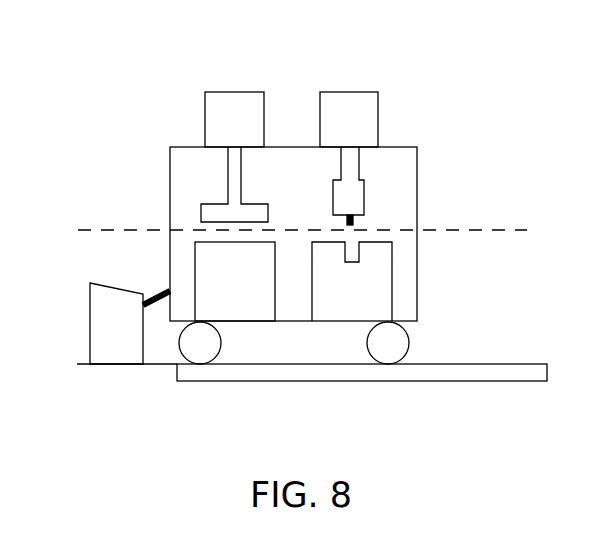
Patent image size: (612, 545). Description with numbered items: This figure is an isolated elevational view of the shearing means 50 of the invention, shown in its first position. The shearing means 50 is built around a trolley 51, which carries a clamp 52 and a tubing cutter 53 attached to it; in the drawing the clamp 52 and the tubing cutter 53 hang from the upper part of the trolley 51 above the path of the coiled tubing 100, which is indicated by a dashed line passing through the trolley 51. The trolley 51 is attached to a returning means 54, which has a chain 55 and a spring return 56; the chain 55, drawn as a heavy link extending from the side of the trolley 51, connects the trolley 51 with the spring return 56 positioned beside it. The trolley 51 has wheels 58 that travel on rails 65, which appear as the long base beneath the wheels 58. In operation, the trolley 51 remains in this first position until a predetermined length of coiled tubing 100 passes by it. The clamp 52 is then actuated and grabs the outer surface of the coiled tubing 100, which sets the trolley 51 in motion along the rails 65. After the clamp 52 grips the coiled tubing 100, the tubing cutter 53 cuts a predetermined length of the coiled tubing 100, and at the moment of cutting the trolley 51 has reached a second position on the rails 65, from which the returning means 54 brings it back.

The shearing means 50 is at (126, 109).
The trolley 51 is at (168, 173).
The clamp 52 is at (250, 208).
The tubing cutter 53 is at (358, 196).
The returning means 54 is at (91, 300).
The chain 55 is at (158, 296).
The spring return 56 is at (128, 348).
The wheels 58 is at (218, 344).
The rails 65 is at (402, 372).
The coiled tubing 100 is at (82, 228).